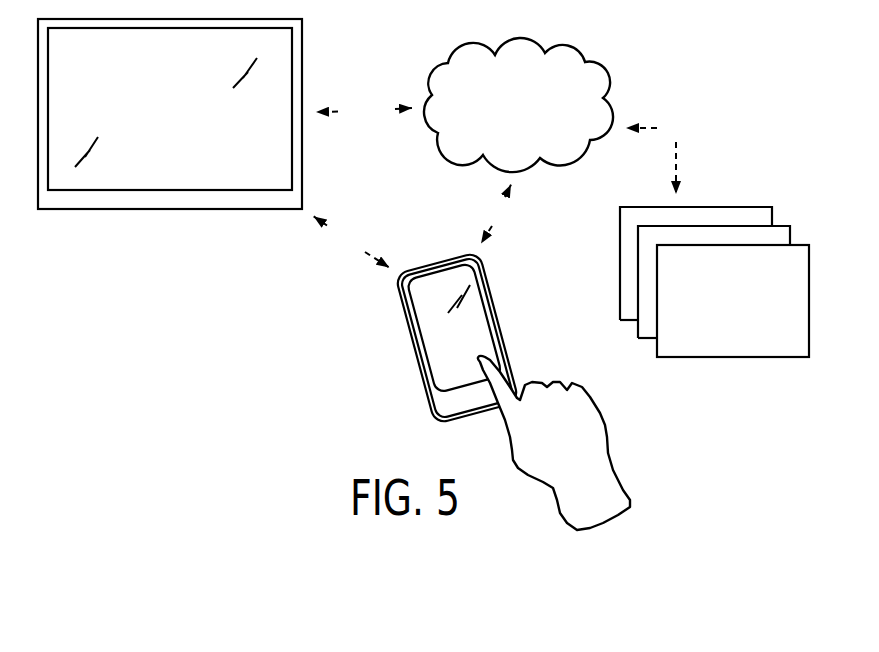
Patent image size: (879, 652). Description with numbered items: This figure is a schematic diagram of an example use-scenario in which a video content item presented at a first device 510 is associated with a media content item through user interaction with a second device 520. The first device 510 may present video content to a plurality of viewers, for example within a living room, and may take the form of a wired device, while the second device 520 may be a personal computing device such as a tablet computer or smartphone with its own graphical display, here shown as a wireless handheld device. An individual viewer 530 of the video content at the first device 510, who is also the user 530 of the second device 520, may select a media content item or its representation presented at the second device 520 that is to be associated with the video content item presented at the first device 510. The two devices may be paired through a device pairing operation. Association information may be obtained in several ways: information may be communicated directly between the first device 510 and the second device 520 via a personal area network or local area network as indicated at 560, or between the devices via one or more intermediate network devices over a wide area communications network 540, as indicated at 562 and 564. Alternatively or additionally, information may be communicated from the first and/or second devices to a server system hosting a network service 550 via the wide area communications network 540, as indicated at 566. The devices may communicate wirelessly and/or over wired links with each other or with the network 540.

The first device 510 is at (195, 170).
The second device 520 is at (477, 353).
The viewer 530 is at (570, 445).
The wide area communications network 540 is at (535, 147).
The network service 550 is at (748, 343).
The personal area network or local area network communication 560 is at (352, 241).
The communication between first device and intermediate network device 562 is at (364, 114).
The communication between second device and intermediate network device 564 is at (498, 214).
The communication to network service 566 is at (664, 155).